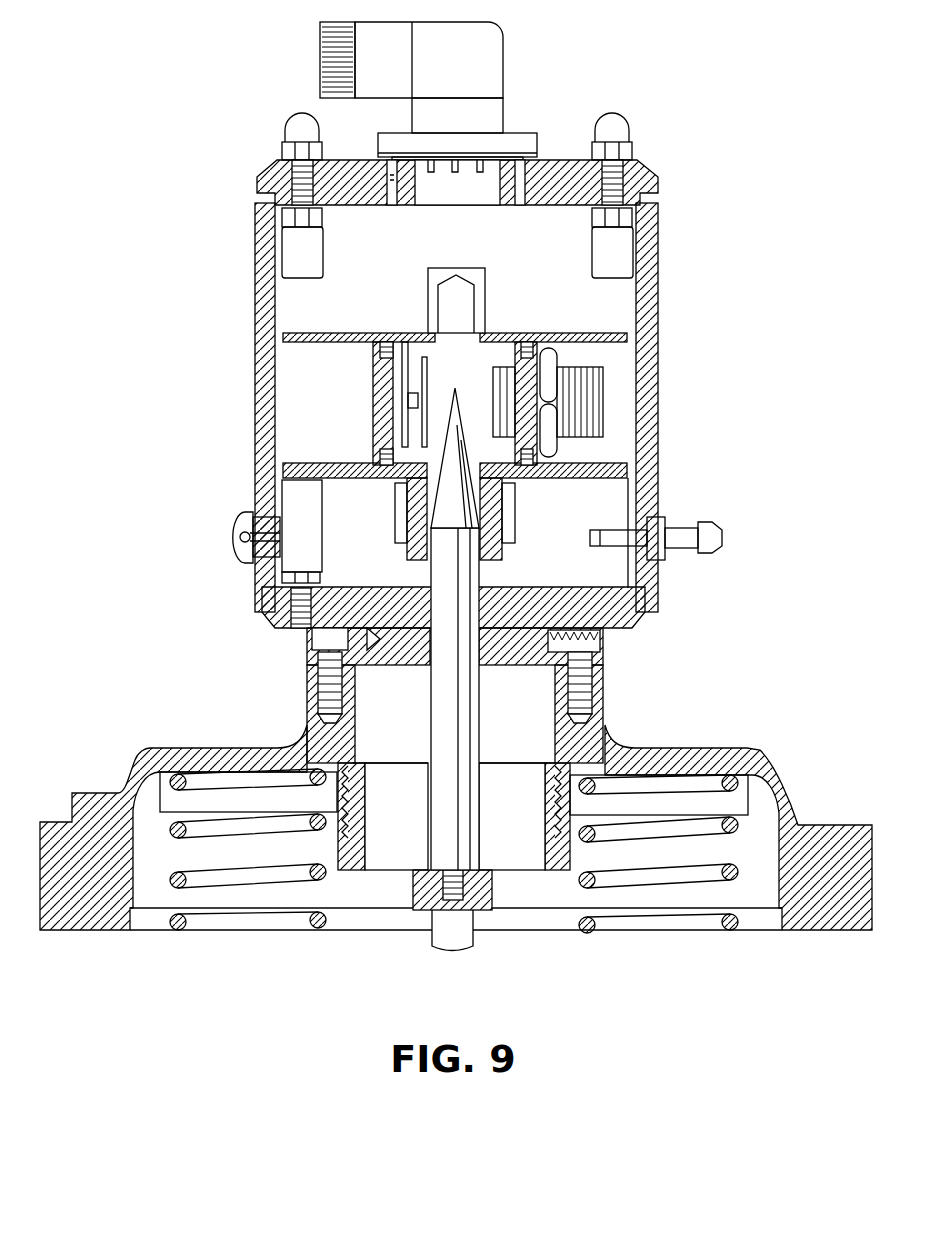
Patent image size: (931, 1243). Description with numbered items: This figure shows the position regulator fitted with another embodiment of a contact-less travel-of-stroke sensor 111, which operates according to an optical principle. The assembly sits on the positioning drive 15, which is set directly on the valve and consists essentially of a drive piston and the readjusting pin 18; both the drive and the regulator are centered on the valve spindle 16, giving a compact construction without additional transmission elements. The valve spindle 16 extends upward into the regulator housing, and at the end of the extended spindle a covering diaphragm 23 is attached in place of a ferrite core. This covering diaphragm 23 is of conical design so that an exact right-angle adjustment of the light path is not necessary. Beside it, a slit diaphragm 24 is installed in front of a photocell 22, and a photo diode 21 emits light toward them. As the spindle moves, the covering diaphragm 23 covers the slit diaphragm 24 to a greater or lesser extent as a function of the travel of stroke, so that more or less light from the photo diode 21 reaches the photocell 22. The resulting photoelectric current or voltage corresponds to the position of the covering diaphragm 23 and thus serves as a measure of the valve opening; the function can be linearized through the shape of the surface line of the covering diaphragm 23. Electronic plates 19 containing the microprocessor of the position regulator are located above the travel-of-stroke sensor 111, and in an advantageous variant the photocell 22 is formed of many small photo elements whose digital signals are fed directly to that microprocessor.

The travel-of-stroke sensor 111 is at (712, 391).
The positioning drive 15 is at (812, 762).
The valve spindle 16 is at (466, 701).
The readjusting pin 18 is at (587, 780).
The electronic plates 19 is at (407, 357).
The photo diode 21 is at (582, 370).
The photocell 22 is at (407, 395).
The covering diaphragm 23 is at (457, 442).
The slit diaphragm 24 is at (422, 432).